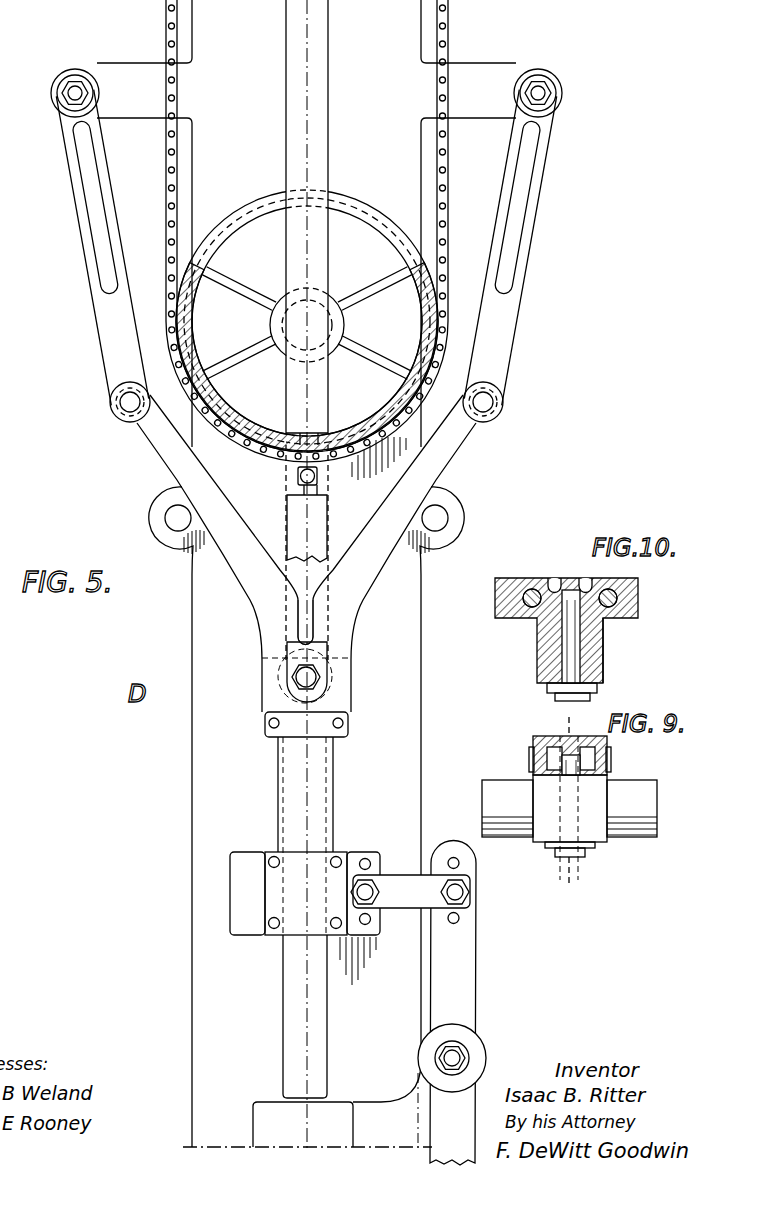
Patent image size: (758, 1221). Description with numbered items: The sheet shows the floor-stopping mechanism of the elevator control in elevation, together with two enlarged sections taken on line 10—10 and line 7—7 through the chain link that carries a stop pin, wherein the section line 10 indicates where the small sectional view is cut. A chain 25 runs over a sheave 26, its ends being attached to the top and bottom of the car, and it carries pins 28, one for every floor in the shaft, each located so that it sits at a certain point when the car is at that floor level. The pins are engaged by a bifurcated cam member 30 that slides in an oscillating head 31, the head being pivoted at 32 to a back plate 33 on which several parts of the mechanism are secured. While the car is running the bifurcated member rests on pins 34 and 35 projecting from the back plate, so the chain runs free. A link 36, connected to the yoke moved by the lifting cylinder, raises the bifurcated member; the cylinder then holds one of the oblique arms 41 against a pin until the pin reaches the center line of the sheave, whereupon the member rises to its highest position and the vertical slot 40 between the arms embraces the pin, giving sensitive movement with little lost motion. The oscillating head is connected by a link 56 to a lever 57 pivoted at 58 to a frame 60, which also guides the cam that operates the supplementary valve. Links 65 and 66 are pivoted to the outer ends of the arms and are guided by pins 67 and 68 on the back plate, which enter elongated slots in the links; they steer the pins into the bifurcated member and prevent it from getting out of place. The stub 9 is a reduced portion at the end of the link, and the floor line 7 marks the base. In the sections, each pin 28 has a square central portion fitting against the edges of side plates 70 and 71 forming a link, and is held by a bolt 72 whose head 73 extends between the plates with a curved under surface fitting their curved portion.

In FIG. 5, the floor or base line 7 is at (306, 1157).
In FIG. 5, the reduced neck of rod 9 is at (318, 438).
In FIG. 9, the section line 10- 10 is at (570, 717).
In FIG. 5, the chain 25 is at (167, 163).
In FIG. 10, the chain 25 is at (639, 597).
In FIG. 9, the chain 25 is at (533, 748).
In FIG. 5, the sheave 26 is at (247, 200).
In FIG. 5, the pin 28 is at (297, 477).
In FIG. 10, the pin 28 is at (604, 672).
In FIG. 9, the pin 28 is at (640, 797).
In FIG. 5, the bifurcated cam member 30 is at (352, 601).
In FIG. 5, the oscillating head 31 is at (335, 795).
In FIG. 5, the pivot point 32 is at (299, 678).
In FIG. 5, the back plate 33 is at (191, 788).
In FIG. 5, the pin 34 is at (165, 514).
In FIG. 5, the pin 35 is at (448, 514).
In FIG. 5, the link 36 is at (321, 104).
In FIG. 5, the slot 40 is at (301, 614).
In FIG. 5, the arms 41 is at (153, 441).
In FIG. 5, the link 56 is at (420, 880).
In FIG. 5, the lever 57 is at (475, 1003).
In FIG. 5, the pivot 58 is at (470, 1055).
In FIG. 5, the frame 60 is at (371, 1103).
In FIG. 5, the link 65 is at (107, 320).
In FIG. 5, the link 66 is at (522, 270).
In FIG. 5, the pin 67 is at (75, 69).
In FIG. 5, the pin 68 is at (557, 86).
In FIG. 9, the side plate 70 is at (529, 760).
In FIG. 9, the side plate 71 is at (612, 760).
In FIG. 10, the bolt 72 is at (565, 652).
In FIG. 9, the bolt 72 is at (564, 860).
In FIG. 10, the head 73 is at (569, 579).